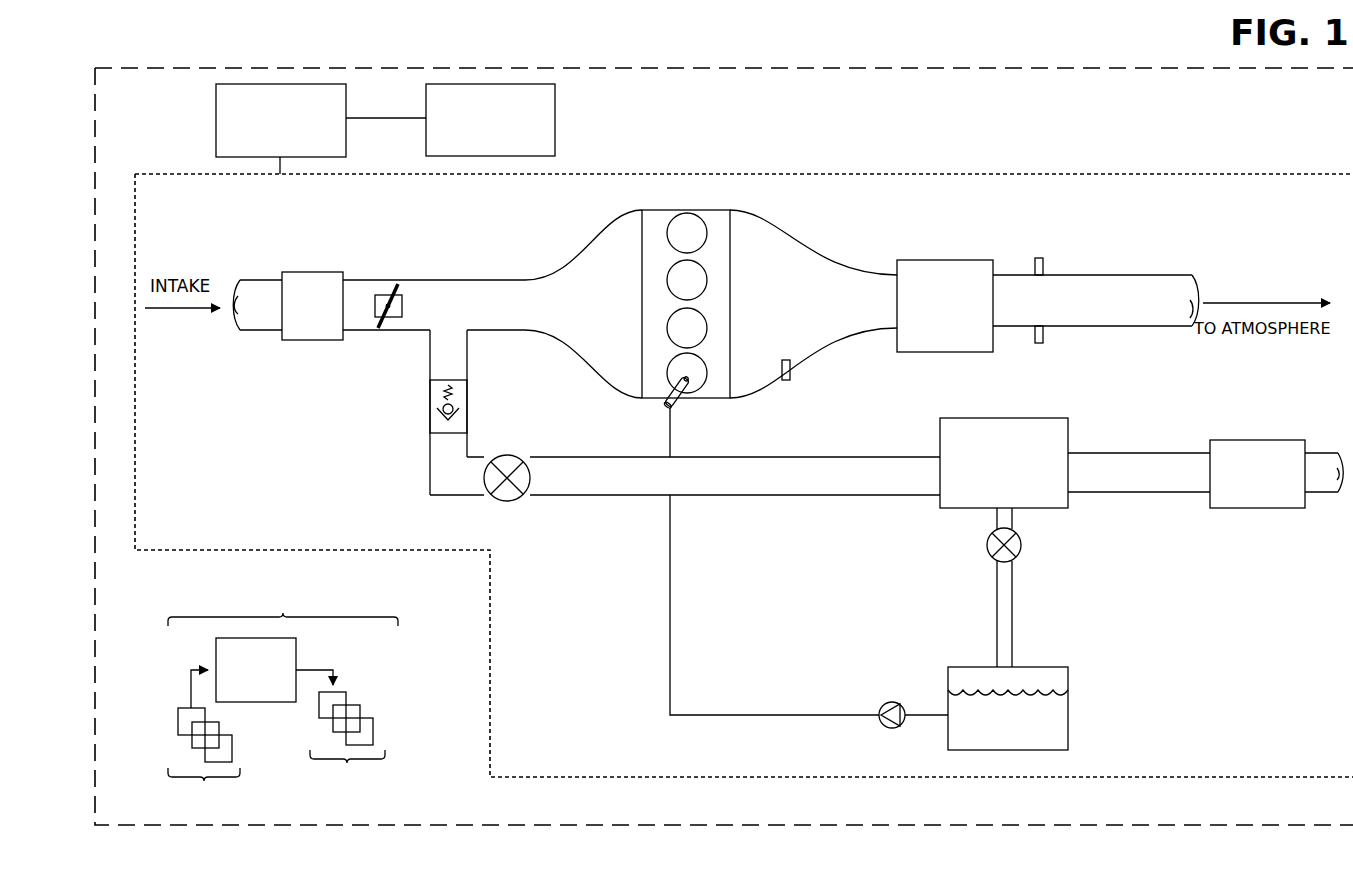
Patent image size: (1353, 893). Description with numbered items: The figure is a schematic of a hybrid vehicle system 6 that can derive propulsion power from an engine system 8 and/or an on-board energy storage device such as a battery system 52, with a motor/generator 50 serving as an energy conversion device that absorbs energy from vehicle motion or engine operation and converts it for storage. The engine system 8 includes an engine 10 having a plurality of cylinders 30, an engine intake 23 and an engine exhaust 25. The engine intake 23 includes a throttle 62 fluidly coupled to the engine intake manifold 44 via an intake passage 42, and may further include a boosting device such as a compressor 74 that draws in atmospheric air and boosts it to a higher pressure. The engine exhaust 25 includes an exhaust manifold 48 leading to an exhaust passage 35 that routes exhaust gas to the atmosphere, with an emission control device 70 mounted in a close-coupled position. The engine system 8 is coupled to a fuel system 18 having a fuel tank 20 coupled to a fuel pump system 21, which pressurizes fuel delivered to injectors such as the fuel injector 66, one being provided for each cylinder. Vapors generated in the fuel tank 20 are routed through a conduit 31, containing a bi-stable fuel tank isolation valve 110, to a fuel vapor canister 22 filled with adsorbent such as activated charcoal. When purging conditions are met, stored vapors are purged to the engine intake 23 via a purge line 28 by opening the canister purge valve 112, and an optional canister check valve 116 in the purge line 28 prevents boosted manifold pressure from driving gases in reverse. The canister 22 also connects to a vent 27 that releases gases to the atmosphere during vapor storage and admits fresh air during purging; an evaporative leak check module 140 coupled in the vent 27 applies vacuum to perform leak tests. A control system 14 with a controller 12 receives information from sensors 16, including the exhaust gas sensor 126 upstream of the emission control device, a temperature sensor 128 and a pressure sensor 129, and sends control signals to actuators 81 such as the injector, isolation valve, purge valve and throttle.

The hybrid vehicle system 6 is at (146, 48).
The engine system 8 is at (1277, 224).
The engine 10 is at (731, 290).
The controller 12 is at (256, 670).
The control system 14 is at (283, 597).
The sensors 16 is at (204, 745).
The fuel system 18 is at (1162, 668).
The fuel tank 20 is at (1068, 730).
The fuel pump system 21 is at (893, 703).
The fuel vapor canister 22 is at (1004, 463).
The engine intake 23 is at (568, 230).
The engine exhaust 25 is at (832, 240).
The vent 27 is at (1205, 472).
The purge line 28 is at (685, 476).
The cylinders 30 is at (704, 226).
The conduit 31 is at (997, 636).
The exhaust passage 35 is at (1148, 275).
The intake passage 42 is at (419, 332).
The engine intake manifold 44 is at (437, 304).
The exhaust manifold 48 is at (813, 304).
The motor/generator 50 is at (321, 129).
The battery system 52 is at (490, 120).
The throttle 62 is at (400, 313).
The fuel injector 66 is at (675, 403).
The emission control device 70 is at (932, 262).
The compressor 74 is at (318, 272).
The actuators 81 is at (342, 737).
The fuel tank isolation valve 110 is at (988, 545).
The canister purge valve 112 is at (510, 456).
The canister check valve 116 is at (468, 399).
The exhaust gas sensor 126 is at (790, 366).
The temperature sensor 128 is at (1034, 333).
The pressure sensor 129 is at (1034, 268).
The evaporative leak check module 140 is at (1257, 474).